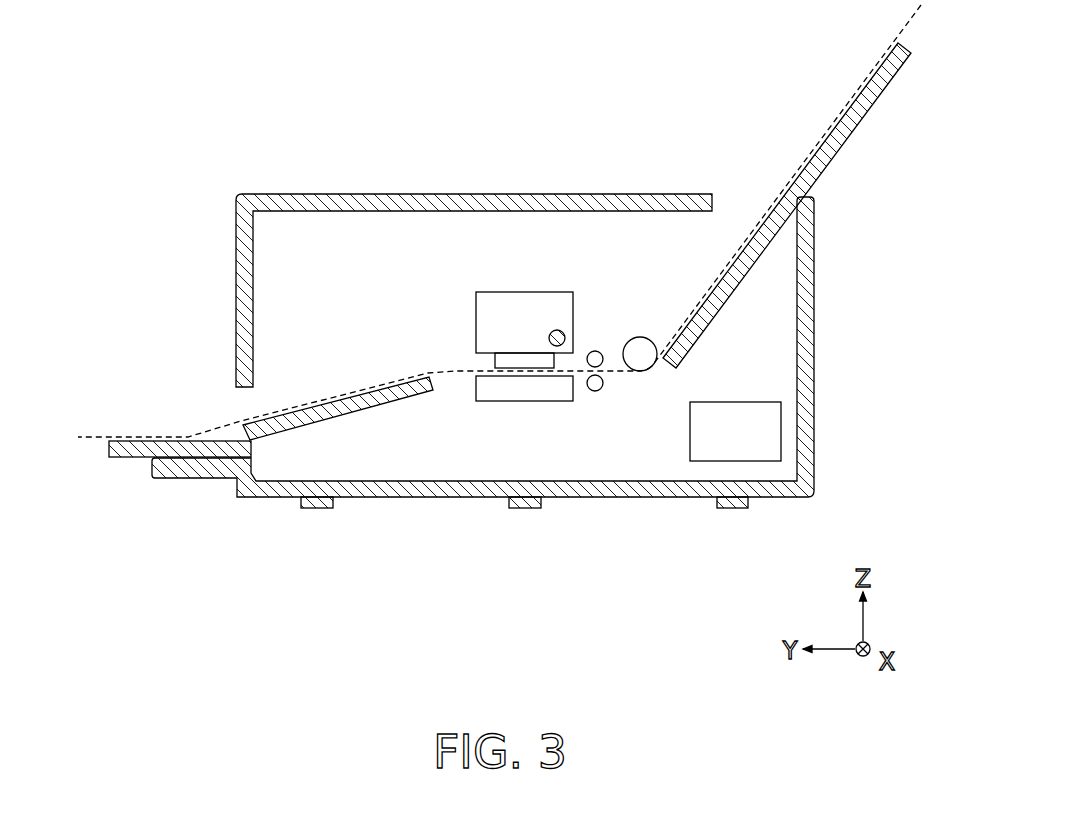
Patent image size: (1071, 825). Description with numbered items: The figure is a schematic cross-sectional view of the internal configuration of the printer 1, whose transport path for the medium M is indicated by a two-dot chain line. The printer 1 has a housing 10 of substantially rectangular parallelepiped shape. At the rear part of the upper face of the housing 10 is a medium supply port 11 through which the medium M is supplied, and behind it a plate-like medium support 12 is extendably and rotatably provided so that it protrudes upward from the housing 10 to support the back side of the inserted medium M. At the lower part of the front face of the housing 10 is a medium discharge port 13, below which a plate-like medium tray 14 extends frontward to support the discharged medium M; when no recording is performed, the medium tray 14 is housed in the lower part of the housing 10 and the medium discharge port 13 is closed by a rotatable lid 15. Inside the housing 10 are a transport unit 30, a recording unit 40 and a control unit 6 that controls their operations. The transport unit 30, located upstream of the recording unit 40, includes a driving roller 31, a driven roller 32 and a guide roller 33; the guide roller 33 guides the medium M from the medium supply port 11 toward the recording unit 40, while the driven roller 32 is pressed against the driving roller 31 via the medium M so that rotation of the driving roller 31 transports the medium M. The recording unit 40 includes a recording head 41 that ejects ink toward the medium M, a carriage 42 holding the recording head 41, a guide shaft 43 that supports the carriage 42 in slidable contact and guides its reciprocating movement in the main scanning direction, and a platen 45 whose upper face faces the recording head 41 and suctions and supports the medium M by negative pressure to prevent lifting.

The printer 1 is at (258, 93).
The control unit 6 is at (781, 412).
The housing 10 is at (826, 446).
The medium supply port 11 is at (746, 190).
The medium support 12 is at (845, 142).
The medium discharge port 13 is at (230, 406).
The medium tray 14 is at (118, 458).
The lid 15 is at (178, 479).
The transport unit 30 is at (613, 335).
The driving roller 31 is at (595, 391).
The driven roller 32 is at (595, 351).
The guide roller 33 is at (642, 337).
The recording unit 40 is at (492, 342).
The recording head 41 is at (494, 364).
The carriage 42 is at (527, 292).
The guide shaft 43 is at (549, 337).
The platen 45 is at (527, 401).
The medium M is at (856, 100).